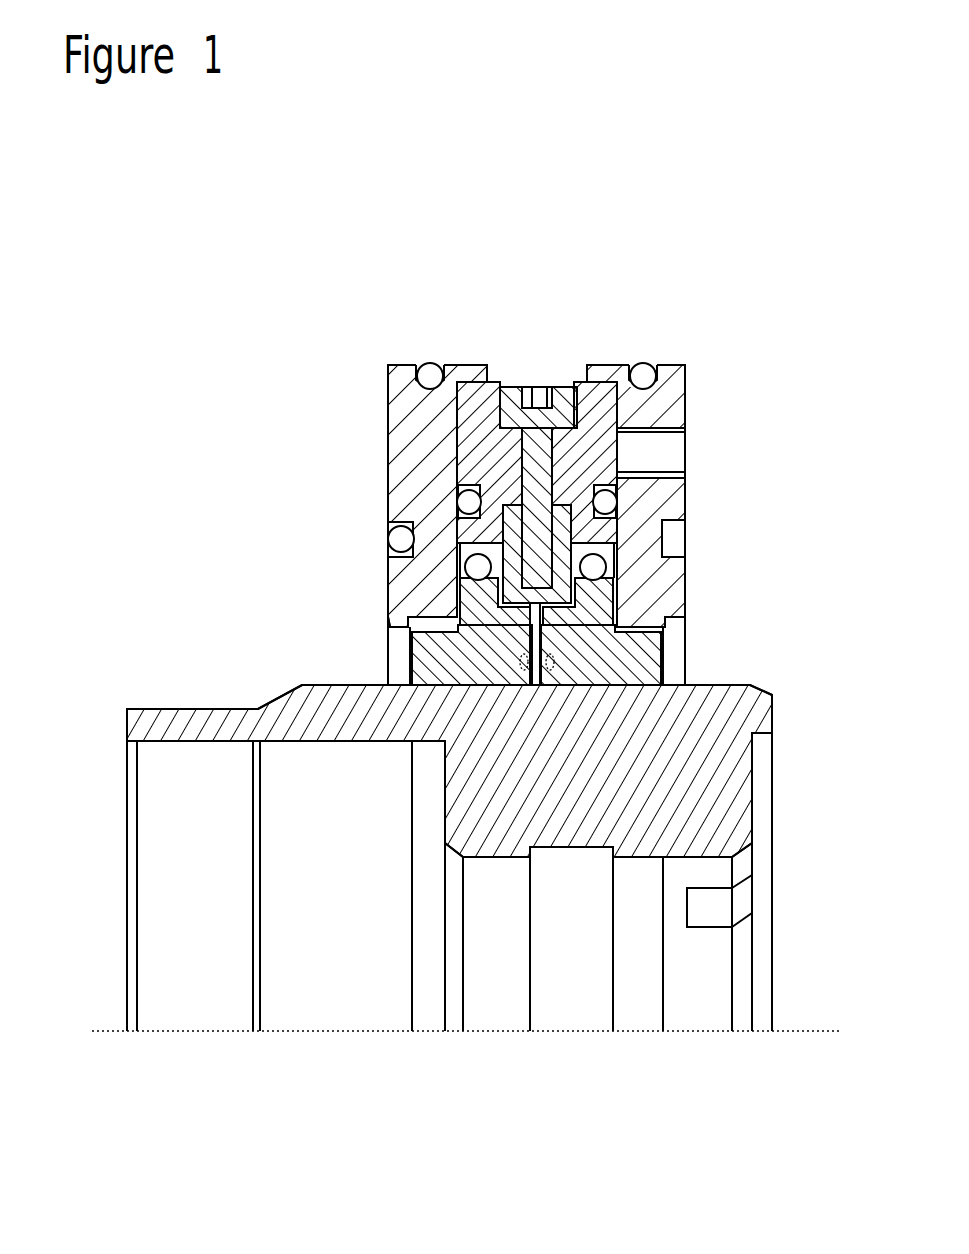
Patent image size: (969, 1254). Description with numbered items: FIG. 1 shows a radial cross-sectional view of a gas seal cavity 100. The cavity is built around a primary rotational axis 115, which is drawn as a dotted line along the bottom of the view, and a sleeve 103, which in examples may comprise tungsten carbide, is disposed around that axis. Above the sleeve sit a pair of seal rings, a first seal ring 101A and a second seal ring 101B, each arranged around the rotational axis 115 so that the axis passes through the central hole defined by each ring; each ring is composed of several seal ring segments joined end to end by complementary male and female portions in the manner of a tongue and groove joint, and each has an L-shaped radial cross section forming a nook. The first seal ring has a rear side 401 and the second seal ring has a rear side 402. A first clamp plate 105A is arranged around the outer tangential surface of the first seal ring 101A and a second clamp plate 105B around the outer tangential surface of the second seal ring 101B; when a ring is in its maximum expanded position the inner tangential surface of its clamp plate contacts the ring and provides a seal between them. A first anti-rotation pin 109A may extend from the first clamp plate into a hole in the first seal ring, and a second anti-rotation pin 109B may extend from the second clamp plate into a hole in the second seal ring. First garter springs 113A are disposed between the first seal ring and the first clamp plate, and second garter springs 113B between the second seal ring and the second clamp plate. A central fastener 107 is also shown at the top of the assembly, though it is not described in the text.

The clamping device 100 is at (280, 279).
The first seal ring 101A is at (397, 645).
The second seal ring 101B is at (672, 645).
The sleeve 103 is at (317, 742).
The first clamp plate 105A is at (388, 373).
The second clamp plate 105B is at (687, 370).
The screw 107 is at (533, 390).
The first anti-rotation pin 109A is at (462, 586).
The second anti-rotation pin 109B is at (612, 586).
The first garter springs 113A is at (466, 556).
The second garter springs 113B is at (606, 556).
The primary rotational axis 115 is at (358, 1033).
The rear side of the first seal ring 401 is at (527, 677).
The rear side of the second seal ring 402 is at (548, 683).